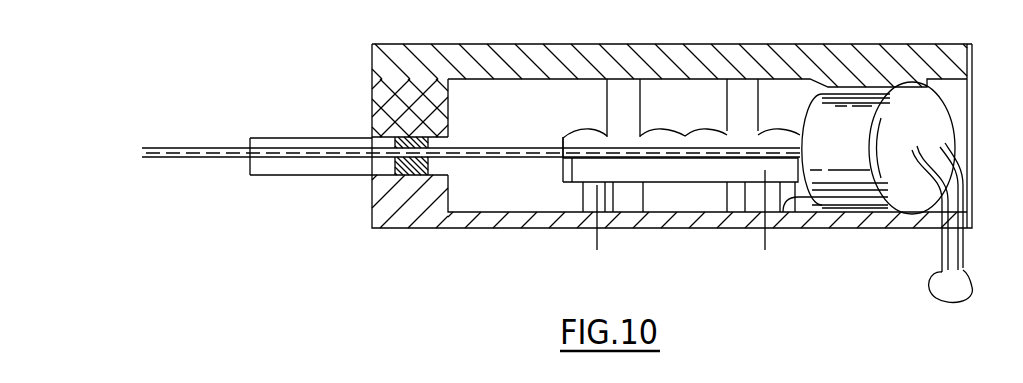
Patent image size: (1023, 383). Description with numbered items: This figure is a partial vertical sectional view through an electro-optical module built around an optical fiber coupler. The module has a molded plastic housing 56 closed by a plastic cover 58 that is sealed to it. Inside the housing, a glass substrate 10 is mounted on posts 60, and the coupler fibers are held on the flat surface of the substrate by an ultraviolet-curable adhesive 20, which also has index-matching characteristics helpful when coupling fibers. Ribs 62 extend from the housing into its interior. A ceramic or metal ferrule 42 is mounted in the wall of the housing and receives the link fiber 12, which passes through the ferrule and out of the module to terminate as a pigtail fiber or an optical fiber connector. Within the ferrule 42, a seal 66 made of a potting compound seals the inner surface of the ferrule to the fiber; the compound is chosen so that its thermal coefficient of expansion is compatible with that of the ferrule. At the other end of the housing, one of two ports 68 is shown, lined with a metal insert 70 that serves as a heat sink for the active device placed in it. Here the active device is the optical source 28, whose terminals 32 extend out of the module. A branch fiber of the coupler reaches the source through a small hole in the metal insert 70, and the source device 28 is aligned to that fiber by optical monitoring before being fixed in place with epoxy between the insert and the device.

The glass substrate 10 is at (679, 180).
The link fiber 12 is at (208, 150).
The ultraviolet-curable adhesive 20 is at (592, 130).
The optical source device 28 is at (851, 149).
The terminals 32 is at (972, 292).
The ferrule 42 is at (302, 138).
The molded plastic housing 56 is at (450, 228).
The plastic cover 58 is at (493, 44).
The posts 60 is at (583, 202).
The ribs 62 is at (726, 103).
The seal 66 is at (395, 137).
The ports 68 is at (878, 207).
The metal inserts 70 is at (861, 207).